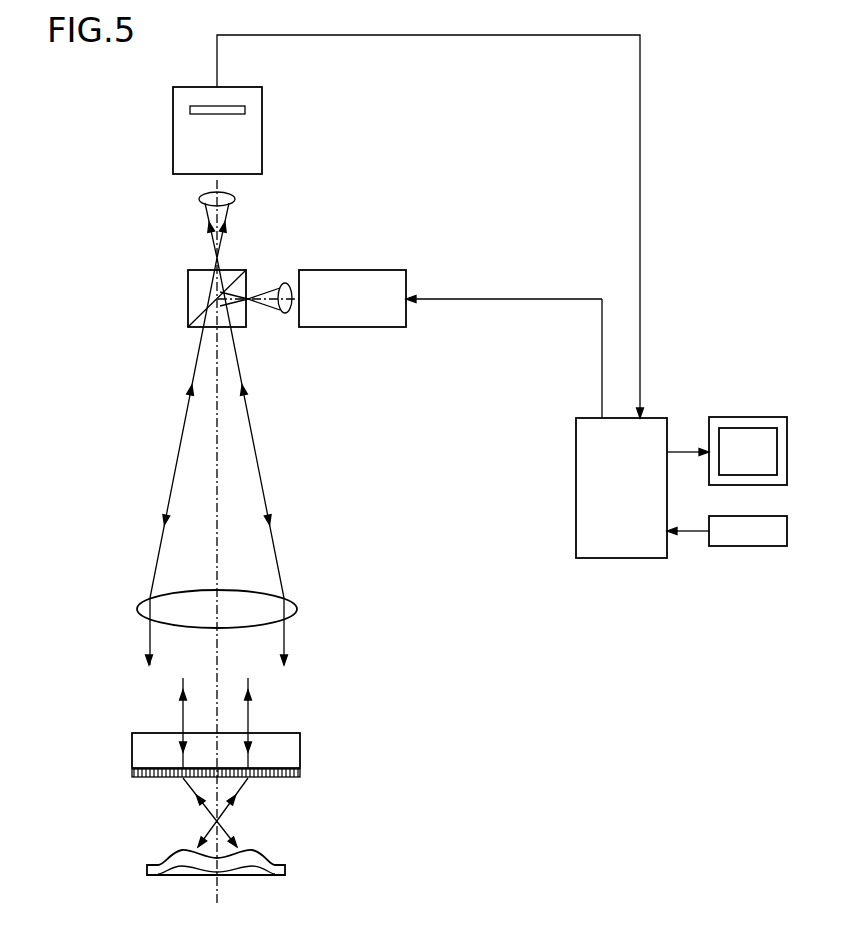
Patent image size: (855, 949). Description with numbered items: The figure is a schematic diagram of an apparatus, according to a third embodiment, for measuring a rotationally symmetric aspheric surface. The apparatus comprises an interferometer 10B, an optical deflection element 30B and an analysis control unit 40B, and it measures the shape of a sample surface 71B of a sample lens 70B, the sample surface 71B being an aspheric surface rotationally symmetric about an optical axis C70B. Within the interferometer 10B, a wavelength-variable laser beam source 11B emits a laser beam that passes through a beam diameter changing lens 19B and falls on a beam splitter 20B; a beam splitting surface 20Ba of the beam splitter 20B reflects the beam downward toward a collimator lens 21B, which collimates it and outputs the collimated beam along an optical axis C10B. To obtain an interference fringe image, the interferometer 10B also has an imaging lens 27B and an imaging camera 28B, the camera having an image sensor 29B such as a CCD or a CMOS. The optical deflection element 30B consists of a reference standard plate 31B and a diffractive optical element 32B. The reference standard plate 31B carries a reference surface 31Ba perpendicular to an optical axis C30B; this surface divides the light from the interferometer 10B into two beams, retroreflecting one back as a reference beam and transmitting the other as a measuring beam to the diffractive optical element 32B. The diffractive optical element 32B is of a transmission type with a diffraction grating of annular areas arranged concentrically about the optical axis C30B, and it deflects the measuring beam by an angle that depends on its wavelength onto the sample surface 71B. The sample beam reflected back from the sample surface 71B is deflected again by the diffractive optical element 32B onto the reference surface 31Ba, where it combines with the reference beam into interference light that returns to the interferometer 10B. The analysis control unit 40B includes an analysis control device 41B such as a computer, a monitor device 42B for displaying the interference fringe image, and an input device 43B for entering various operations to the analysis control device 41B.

The interferometer 10B is at (62, 268).
The wavelength-variable laser beam source 11B is at (383, 270).
The beam diameter changing lens 19B is at (286, 283).
The beam splitter 20B is at (186, 285).
The beam splitting surface 20Ba is at (197, 328).
The collimator lens 21B is at (295, 610).
The imaging lens 27B is at (235, 200).
The imaging camera 28B is at (262, 132).
The image sensor 29B is at (190, 110).
The optical deflection element 30B is at (261, 762).
The reference standard plate 31B is at (300, 756).
The reference surface 31Ba is at (272, 770).
The diffractive optical element 32B is at (300, 775).
The analysis control unit 40B is at (659, 451).
The analysis control device 41B is at (573, 480).
The monitor device 42B is at (760, 417).
The input device 43B is at (750, 548).
The sample lens 70B is at (254, 841).
The sample surface 71B is at (268, 852).
The optical axis C10B is at (215, 498).
The optical axis C30B is at (217, 718).
The optical axis C70B is at (218, 888).